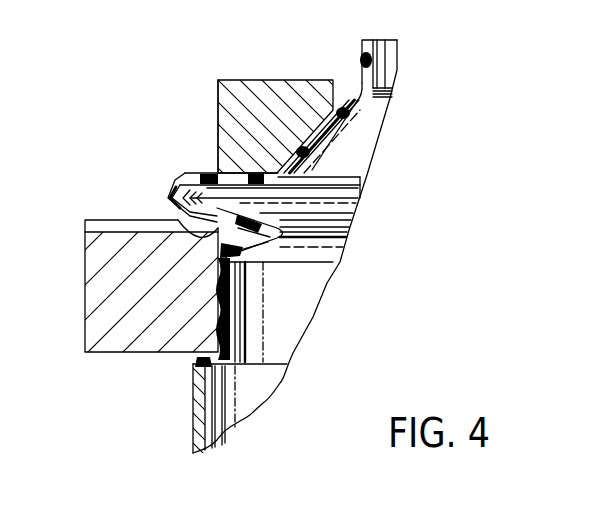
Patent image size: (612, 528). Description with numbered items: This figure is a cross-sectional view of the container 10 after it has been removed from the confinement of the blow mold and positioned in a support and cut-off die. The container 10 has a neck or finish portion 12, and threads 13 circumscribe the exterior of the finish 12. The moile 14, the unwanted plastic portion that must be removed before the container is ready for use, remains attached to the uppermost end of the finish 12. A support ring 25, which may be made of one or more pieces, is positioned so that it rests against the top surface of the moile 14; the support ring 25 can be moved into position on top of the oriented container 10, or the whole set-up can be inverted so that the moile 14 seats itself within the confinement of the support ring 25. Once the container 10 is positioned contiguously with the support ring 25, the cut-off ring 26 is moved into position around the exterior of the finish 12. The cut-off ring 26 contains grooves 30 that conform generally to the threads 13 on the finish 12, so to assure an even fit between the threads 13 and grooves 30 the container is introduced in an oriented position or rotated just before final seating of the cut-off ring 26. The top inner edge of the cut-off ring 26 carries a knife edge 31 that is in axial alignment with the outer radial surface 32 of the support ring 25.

The container 10 is at (367, 173).
The finish portion 12 is at (220, 284).
The threads 13 is at (216, 316).
The moile 14 is at (388, 100).
The support ring 25 is at (228, 102).
The cut-off ring 26 is at (86, 238).
The grooves 30 is at (224, 318).
The knife edge 31 is at (178, 222).
The outer radial surface 32 is at (215, 124).